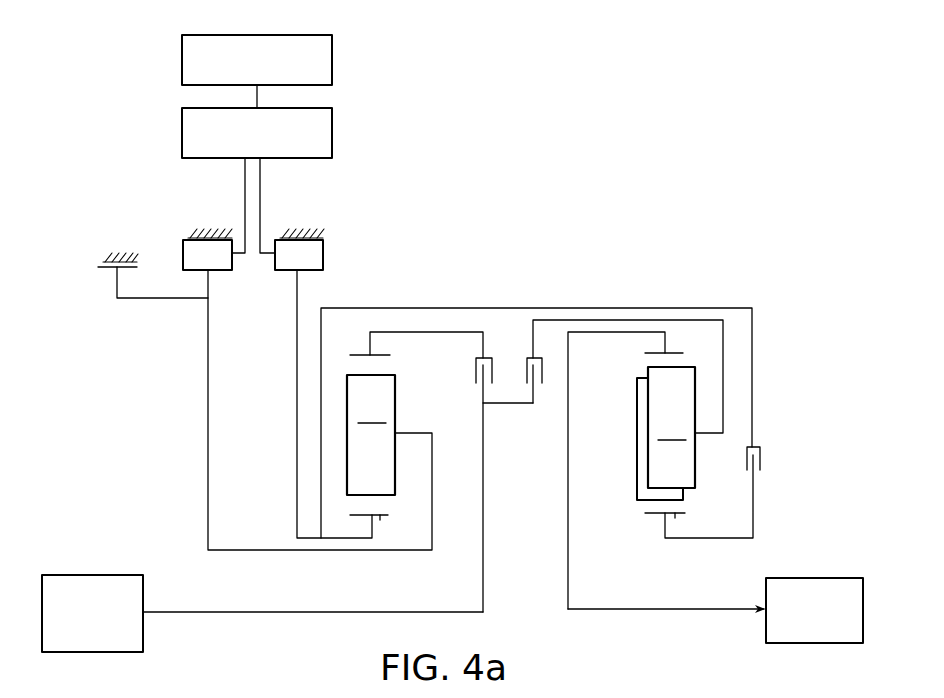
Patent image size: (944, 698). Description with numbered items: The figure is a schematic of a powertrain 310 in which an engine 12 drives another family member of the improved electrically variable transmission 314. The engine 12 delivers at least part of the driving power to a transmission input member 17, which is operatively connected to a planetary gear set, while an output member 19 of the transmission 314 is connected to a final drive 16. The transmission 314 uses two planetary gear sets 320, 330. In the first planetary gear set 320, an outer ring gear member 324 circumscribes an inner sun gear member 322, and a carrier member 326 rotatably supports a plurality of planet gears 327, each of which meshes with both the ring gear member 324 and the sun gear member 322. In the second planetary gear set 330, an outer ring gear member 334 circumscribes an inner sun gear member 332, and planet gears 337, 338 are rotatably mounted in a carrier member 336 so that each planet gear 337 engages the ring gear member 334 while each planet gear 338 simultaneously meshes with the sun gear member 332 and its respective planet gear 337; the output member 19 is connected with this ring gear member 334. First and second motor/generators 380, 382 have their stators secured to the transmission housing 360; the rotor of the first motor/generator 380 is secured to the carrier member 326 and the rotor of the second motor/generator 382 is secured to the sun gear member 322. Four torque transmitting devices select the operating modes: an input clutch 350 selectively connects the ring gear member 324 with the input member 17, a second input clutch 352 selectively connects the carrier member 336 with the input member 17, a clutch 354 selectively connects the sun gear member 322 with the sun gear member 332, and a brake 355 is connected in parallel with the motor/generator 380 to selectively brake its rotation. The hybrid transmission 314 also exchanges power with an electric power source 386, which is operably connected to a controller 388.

The engine 12 is at (110, 557).
The final drive 16 is at (800, 562).
The transmission input member 17 is at (177, 614).
The output member 19 is at (725, 612).
The powertrain 310 is at (692, 145).
The electrically variable transmission 314 is at (737, 172).
The first planetary gear set 320 is at (360, 518).
The inner sun gear member 322 is at (380, 518).
The outer ring gear member 324 is at (360, 353).
The carrier member 326 is at (405, 420).
The planet gears 327 is at (371, 435).
The second planetary gear set 330 is at (655, 517).
The inner sun gear member 332 is at (675, 517).
The outer ring gear member 334 is at (658, 352).
The carrier member 336 is at (706, 441).
The planet gear member 337 is at (671, 427).
The planet gear member 338 is at (637, 448).
The input clutch 350 is at (494, 354).
The input clutch 352 is at (544, 353).
The clutch 354 is at (766, 445).
The brake 355 is at (92, 263).
The transmission housing 360 is at (188, 232).
The first motor/generator 380 is at (178, 236).
The second motor/generator 382 is at (332, 237).
The electric power source 386 is at (182, 62).
The controller 388 is at (182, 130).